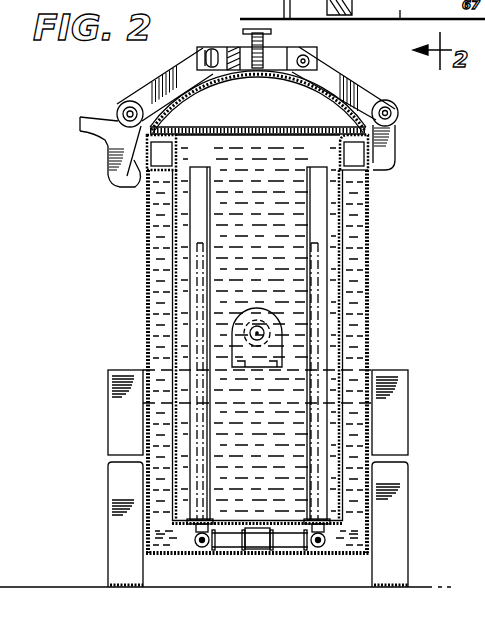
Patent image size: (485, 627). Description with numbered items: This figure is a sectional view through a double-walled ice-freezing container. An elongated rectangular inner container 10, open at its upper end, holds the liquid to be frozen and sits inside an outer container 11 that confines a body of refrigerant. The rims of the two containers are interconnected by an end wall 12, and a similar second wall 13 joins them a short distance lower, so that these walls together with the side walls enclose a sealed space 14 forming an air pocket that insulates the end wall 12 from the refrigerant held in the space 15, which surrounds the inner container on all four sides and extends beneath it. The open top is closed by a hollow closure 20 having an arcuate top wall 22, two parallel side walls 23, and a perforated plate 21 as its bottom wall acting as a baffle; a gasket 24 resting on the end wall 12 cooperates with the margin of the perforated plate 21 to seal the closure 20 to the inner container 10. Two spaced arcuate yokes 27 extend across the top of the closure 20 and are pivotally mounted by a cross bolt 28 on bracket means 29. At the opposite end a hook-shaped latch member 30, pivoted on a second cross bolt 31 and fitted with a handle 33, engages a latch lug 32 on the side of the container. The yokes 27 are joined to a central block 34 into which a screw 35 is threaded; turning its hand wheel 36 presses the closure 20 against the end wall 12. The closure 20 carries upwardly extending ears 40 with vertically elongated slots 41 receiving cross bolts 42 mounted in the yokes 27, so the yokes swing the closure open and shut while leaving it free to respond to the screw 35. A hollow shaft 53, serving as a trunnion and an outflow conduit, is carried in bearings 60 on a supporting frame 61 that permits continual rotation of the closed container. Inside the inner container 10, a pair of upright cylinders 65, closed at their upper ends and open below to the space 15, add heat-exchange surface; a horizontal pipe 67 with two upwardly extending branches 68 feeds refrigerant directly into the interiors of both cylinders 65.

The inner container 10 is at (174, 317).
The outer container 11 is at (146, 263).
The end wall 12 is at (336, 140).
The second wall 13 is at (352, 172).
The sealed space 14 is at (356, 151).
The refrigerant space 15 is at (148, 283).
The closure 20 is at (336, 79).
The perforated plate 21 is at (258, 128).
The arcuate top wall 22 is at (200, 72).
The side walls 23 is at (304, 103).
The gasket 24 is at (168, 130).
The arcuate yokes 27 is at (165, 88).
The cross bolt 28 is at (393, 106).
The bracket means 29 is at (388, 139).
The latch member 30 is at (105, 112).
The second cross bolt 31 is at (124, 102).
The latch lug 32 is at (128, 168).
The handle 33 is at (80, 121).
The central block 34 is at (238, 46).
The screw 35 is at (298, 47).
The hand wheel 36 is at (271, 32).
The ears 40 is at (214, 48).
The slots 41 is at (208, 53).
The cross bolts 42 is at (192, 62).
The hollow shaft 53 is at (268, 322).
The bearings 60 is at (246, 309).
The supporting frame 61 is at (408, 367).
The upright cylinders 65 is at (214, 251).
The horizontal pipe 67 is at (203, 550).
The branches 68 is at (212, 482).